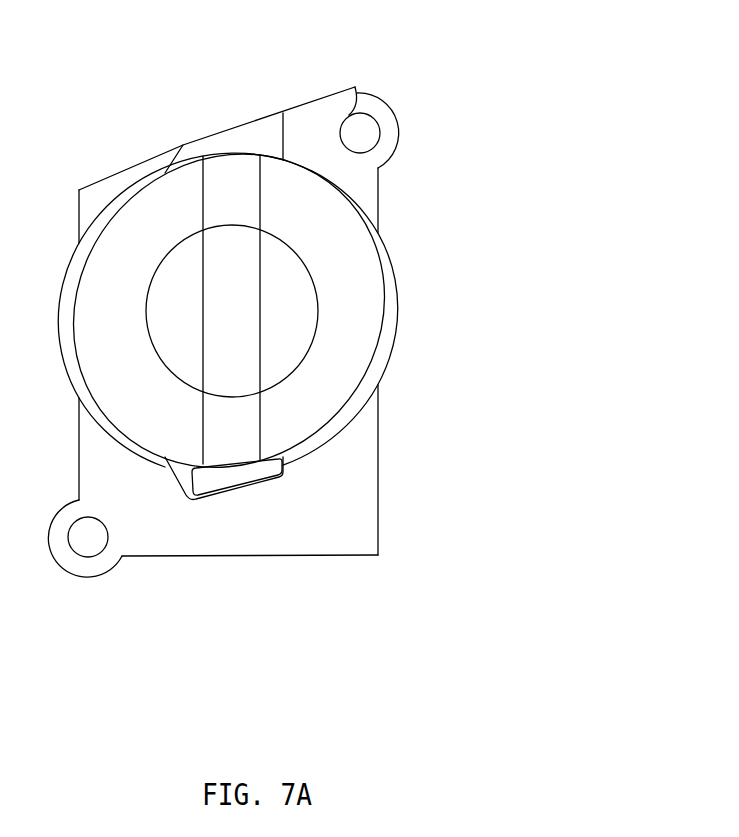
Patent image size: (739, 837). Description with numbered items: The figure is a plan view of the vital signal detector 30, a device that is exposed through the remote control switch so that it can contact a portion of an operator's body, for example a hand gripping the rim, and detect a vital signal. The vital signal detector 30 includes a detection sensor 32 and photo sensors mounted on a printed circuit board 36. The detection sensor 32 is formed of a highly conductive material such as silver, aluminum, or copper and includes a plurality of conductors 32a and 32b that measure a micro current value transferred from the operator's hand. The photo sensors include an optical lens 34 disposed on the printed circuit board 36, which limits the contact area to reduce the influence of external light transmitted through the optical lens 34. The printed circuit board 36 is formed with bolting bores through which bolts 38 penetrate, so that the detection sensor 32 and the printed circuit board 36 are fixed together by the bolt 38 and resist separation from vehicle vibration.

The vital signal detector 30 is at (34, 77).
The detection sensor 32 is at (217, 38).
The conductor 32a is at (120, 243).
The conductor 32b is at (317, 210).
The optical lens 34 is at (238, 440).
The printed circuit board 36 is at (311, 122).
The bolt 38 is at (363, 135).